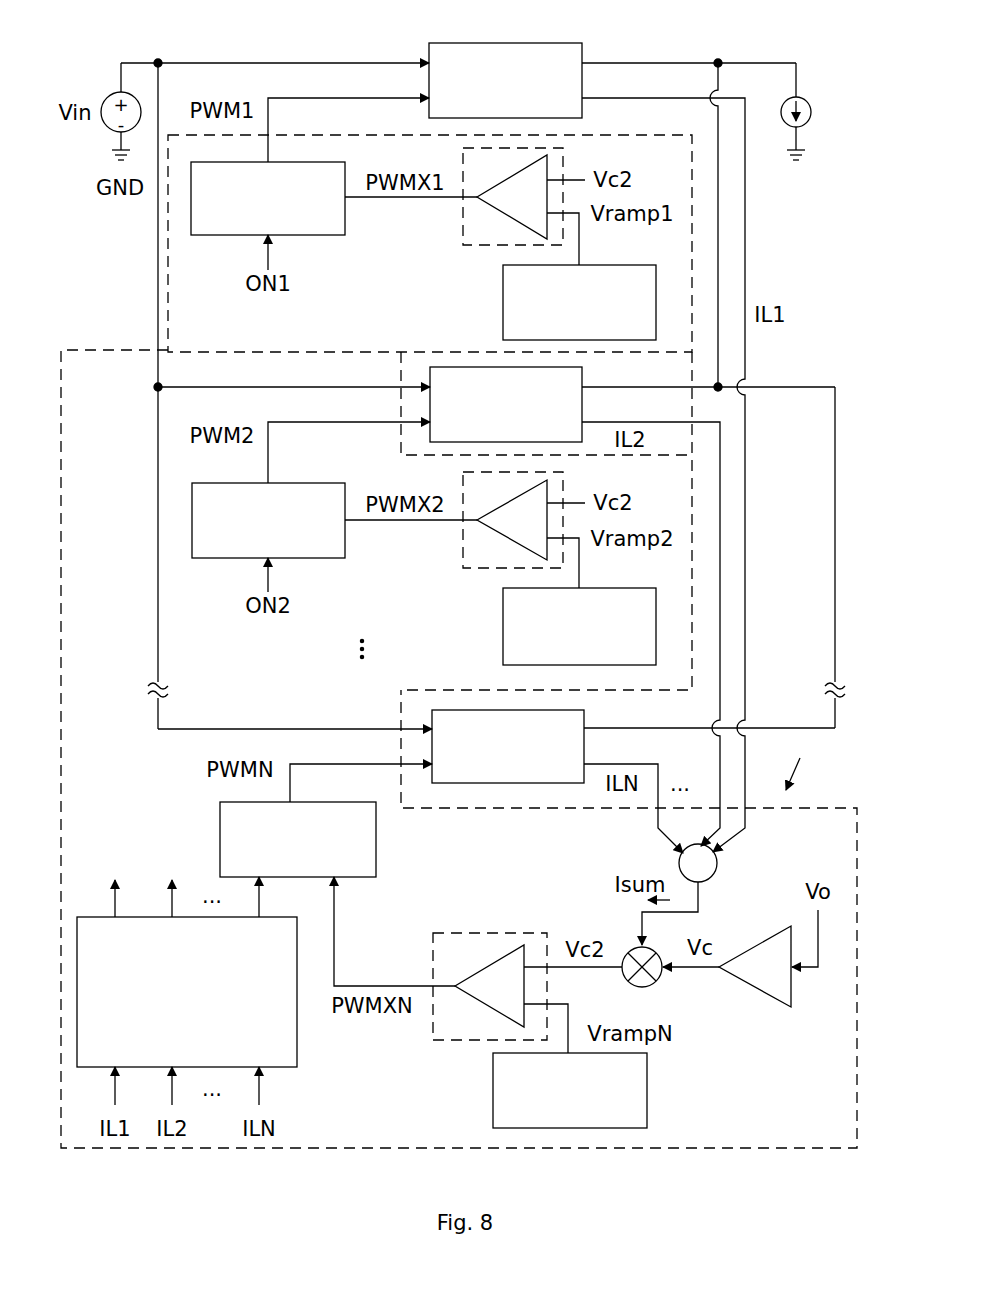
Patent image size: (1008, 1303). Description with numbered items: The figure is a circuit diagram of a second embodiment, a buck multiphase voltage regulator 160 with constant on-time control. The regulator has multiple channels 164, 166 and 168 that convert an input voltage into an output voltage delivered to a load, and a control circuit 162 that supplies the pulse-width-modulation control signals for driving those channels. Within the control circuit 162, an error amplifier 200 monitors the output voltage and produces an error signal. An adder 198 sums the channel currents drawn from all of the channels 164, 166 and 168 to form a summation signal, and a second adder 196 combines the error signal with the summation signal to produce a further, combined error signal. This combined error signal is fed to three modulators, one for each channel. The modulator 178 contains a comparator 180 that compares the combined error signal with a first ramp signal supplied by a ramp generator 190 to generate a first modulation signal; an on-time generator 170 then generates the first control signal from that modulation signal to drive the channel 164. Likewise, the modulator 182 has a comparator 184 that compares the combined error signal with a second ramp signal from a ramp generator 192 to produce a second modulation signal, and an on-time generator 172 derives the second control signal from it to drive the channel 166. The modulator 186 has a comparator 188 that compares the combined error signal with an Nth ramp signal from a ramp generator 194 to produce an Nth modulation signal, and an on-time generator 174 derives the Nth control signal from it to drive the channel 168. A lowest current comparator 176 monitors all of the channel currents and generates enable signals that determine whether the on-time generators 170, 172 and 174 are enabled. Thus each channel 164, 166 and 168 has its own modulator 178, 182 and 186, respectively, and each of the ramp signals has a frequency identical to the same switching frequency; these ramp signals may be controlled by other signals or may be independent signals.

The buck multiphase voltage regulator 160 is at (814, 54).
The control circuit 162 is at (108, 350).
The channel 164 is at (432, 118).
The channel 166 is at (437, 442).
The channel 168 is at (500, 783).
The on-time generator 170 is at (225, 235).
The on-time generator 172 is at (225, 558).
The on-time generator 174 is at (220, 835).
The lowest current comparator 176 is at (297, 1030).
The modulator 178 is at (479, 222).
The comparator 180 is at (517, 221).
The modulator 182 is at (479, 545).
The comparator 184 is at (512, 540).
The modulator 186 is at (490, 990).
The comparator 188 is at (495, 962).
The ramp generator 190 is at (503, 300).
The ramp generator 192 is at (503, 622).
The ramp generator 194 is at (647, 1090).
The adder 196 is at (630, 951).
The adder 198 is at (717, 866).
The error amplifier 200 is at (765, 993).